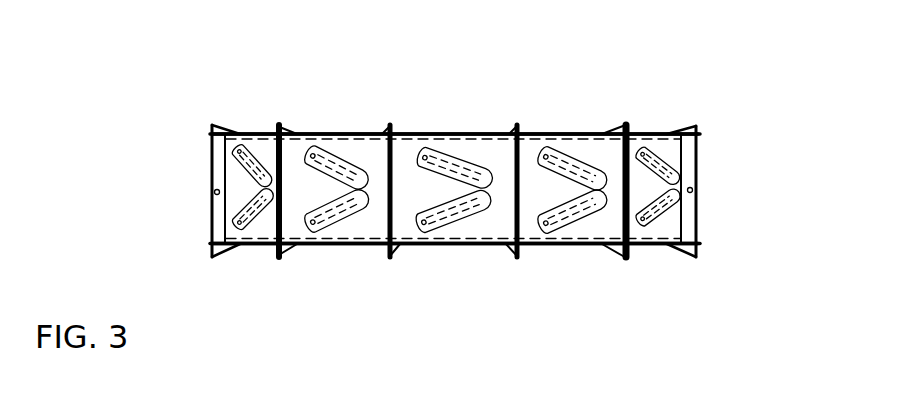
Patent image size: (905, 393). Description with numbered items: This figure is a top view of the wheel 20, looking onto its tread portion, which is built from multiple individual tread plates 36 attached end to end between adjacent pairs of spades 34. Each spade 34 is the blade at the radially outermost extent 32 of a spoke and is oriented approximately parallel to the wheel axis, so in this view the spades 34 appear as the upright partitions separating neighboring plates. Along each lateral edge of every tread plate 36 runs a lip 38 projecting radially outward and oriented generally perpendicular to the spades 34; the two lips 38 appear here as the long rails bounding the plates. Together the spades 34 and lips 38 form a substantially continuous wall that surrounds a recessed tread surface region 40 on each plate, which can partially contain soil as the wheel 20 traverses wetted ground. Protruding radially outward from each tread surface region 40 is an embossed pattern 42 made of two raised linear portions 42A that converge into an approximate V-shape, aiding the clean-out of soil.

The wheel 20 is at (150, 96).
The radially outermost extent 32 is at (513, 222).
The spade 34 is at (283, 150).
The tread plate 36 is at (364, 230).
The lip 38 is at (375, 133).
The tread surface region 40 is at (590, 145).
The embossed pattern 42 is at (488, 143).
The raised linear portion 42A is at (577, 210).